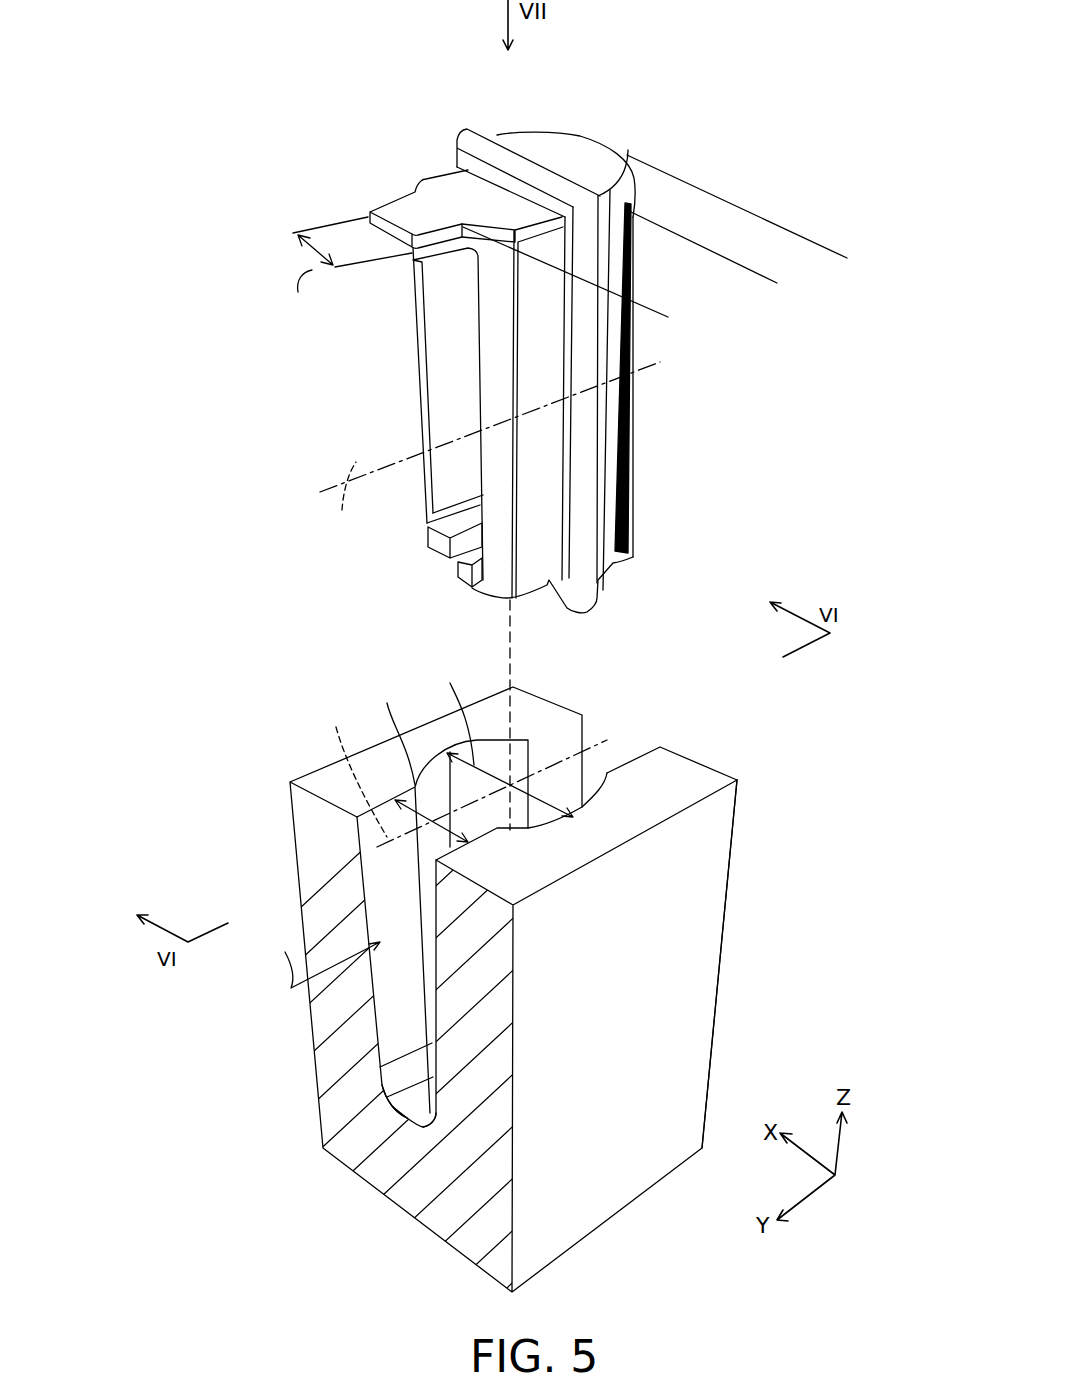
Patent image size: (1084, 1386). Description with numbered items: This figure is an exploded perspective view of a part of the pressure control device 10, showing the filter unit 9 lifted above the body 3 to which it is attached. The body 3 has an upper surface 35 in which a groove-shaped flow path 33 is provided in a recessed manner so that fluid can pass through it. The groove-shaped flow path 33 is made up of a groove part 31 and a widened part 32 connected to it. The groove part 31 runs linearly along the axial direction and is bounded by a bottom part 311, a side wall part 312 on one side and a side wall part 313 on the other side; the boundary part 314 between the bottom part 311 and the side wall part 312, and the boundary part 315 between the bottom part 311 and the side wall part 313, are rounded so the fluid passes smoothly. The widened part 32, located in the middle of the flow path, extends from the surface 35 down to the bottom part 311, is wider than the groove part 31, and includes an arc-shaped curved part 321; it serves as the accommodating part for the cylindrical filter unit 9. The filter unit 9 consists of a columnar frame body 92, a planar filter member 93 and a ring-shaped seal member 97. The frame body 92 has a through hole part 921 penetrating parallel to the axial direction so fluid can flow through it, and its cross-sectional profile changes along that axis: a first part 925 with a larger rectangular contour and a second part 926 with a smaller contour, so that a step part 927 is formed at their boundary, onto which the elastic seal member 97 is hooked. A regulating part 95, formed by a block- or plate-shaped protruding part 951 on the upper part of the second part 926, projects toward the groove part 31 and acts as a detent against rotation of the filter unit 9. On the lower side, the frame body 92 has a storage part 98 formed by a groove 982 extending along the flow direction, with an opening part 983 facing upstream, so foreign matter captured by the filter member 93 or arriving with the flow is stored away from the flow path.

The pressure control device 10 is at (823, 66).
The filter unit 9 is at (605, 132).
The seal member 97 is at (457, 118).
The step part 927 is at (525, 163).
The regulating part 95 is at (362, 214).
The protruding part 951 is at (419, 209).
The through hole part 921 is at (446, 378).
The storage part 98 is at (472, 535).
The groove 982 is at (455, 526).
The opening part 983 is at (442, 557).
The filter member 93 is at (638, 440).
The frame body 92 is at (720, 340).
The first part 925 is at (783, 282).
The second part 926 is at (667, 318).
The body 3 is at (726, 766).
The upper surface 35 is at (688, 782).
The side wall part 312 is at (362, 875).
The side wall part 313 is at (430, 990).
The boundary part 314 is at (383, 1090).
The bottom part 311 is at (408, 1122).
The boundary part 315 is at (436, 1122).
The curved part 321 is at (495, 745).
The groove-shaped flow path 33 is at (616, 676).
The widened part 32 is at (591, 801).
The groove part 31 is at (638, 742).